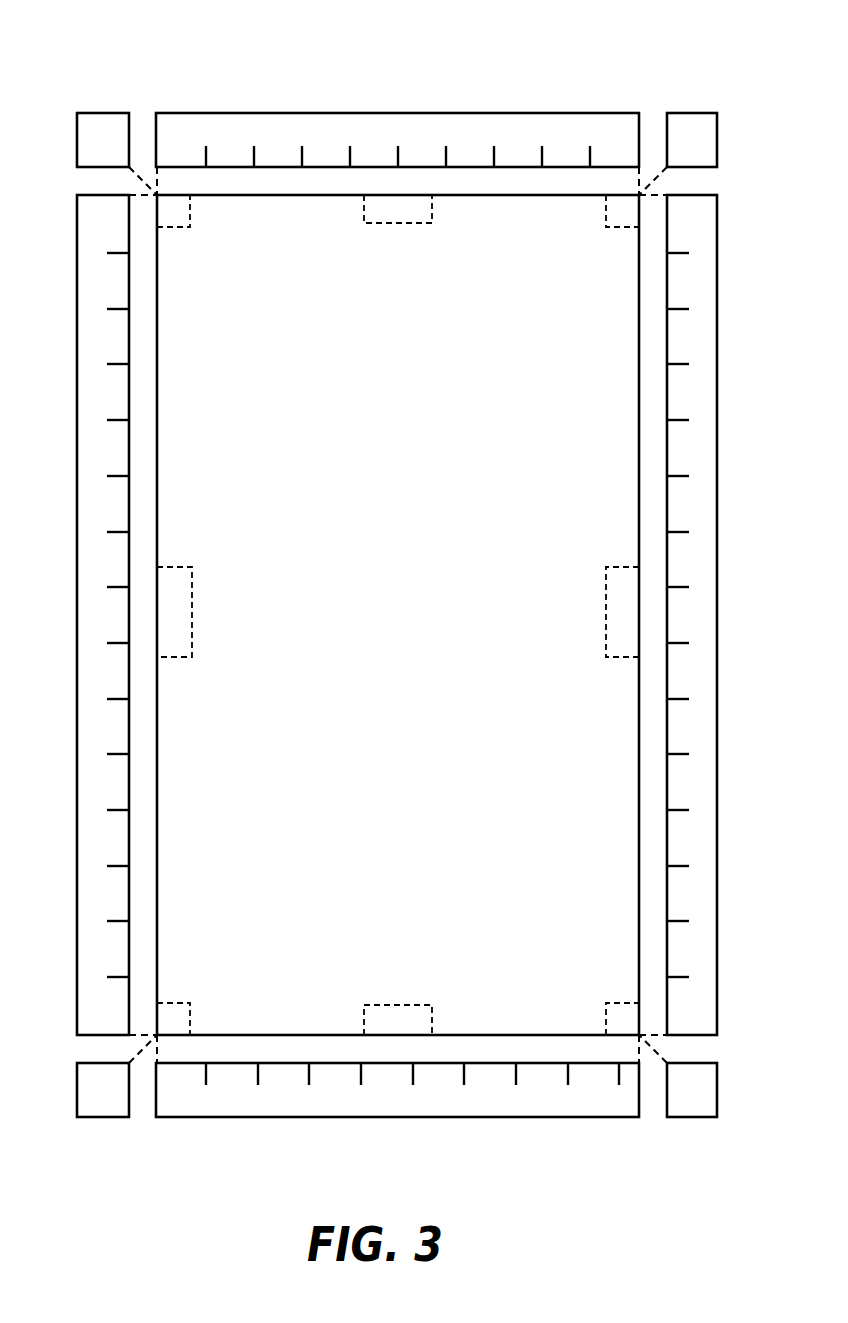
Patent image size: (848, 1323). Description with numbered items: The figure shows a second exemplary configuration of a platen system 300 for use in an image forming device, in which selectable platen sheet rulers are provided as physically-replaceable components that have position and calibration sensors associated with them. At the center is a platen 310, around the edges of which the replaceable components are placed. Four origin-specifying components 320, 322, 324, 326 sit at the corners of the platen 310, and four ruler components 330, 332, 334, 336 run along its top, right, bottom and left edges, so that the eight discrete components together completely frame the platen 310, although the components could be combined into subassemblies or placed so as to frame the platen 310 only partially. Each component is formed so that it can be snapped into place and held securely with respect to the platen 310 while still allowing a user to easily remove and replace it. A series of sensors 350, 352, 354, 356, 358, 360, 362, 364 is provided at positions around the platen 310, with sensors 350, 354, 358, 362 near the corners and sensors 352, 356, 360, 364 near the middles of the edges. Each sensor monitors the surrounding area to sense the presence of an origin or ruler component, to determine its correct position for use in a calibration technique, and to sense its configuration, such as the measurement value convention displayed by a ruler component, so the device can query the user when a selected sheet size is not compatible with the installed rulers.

The platen system 300 is at (100, 40).
The platen 310 is at (414, 535).
The origin-specifying component 320 is at (120, 113).
The origin-specifying component 322 is at (682, 113).
The origin-specifying component 324 is at (692, 1117).
The origin-specifying component 326 is at (110, 1117).
The ruler component 330 is at (276, 113).
The ruler component 332 is at (718, 255).
The ruler component 334 is at (235, 1117).
The ruler component 336 is at (77, 255).
The sensor 350 is at (185, 227).
The sensor 352 is at (395, 224).
The sensor 354 is at (608, 227).
The sensor 356 is at (605, 603).
The sensor 358 is at (606, 1003).
The sensor 360 is at (395, 1005).
The sensor 362 is at (185, 1003).
The sensor 364 is at (193, 610).